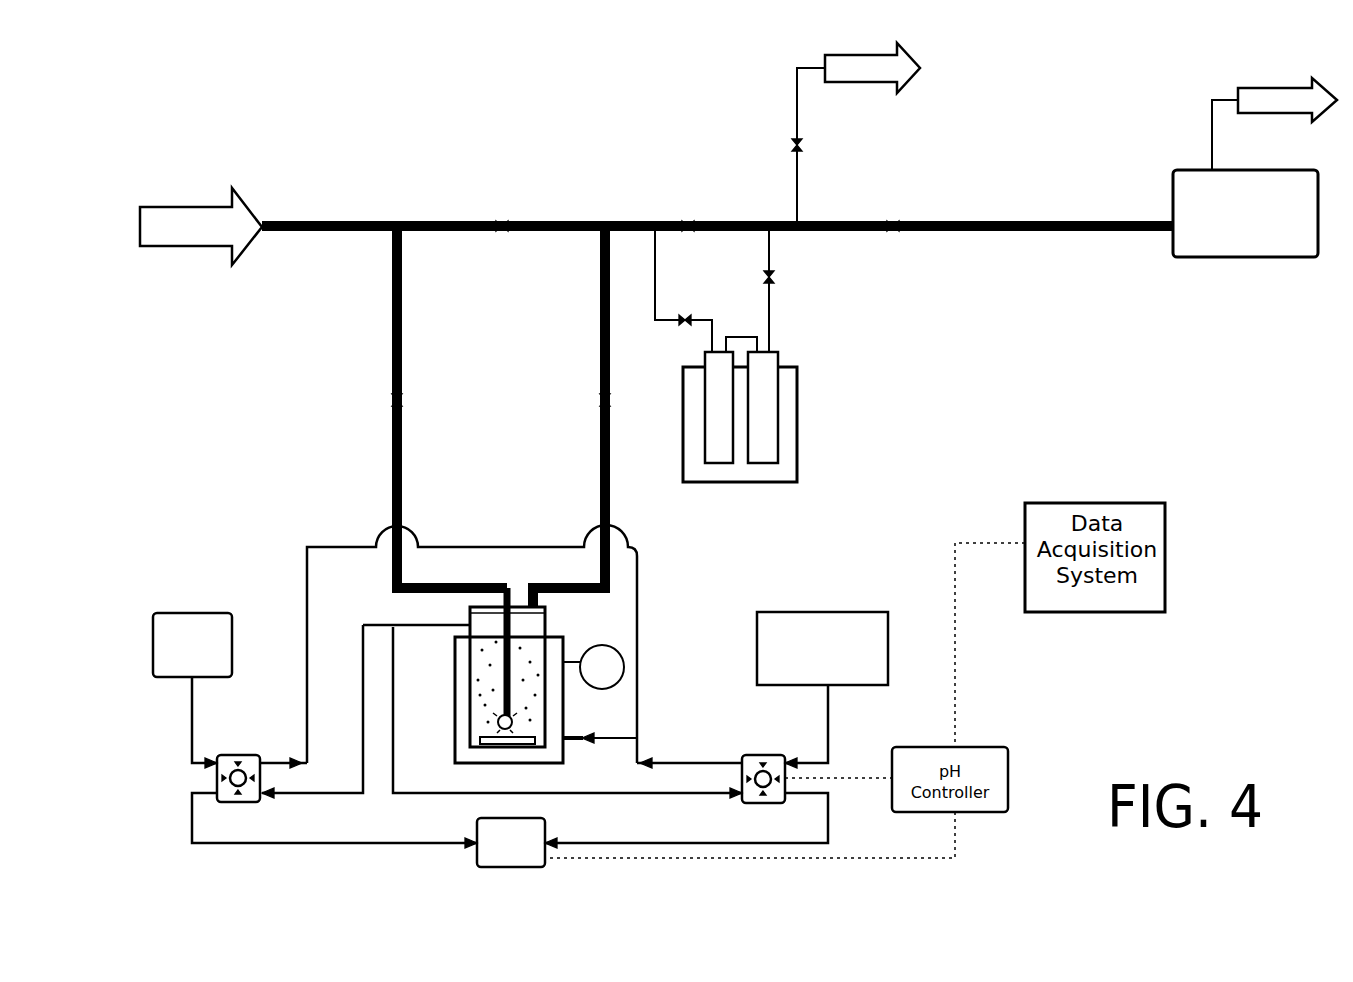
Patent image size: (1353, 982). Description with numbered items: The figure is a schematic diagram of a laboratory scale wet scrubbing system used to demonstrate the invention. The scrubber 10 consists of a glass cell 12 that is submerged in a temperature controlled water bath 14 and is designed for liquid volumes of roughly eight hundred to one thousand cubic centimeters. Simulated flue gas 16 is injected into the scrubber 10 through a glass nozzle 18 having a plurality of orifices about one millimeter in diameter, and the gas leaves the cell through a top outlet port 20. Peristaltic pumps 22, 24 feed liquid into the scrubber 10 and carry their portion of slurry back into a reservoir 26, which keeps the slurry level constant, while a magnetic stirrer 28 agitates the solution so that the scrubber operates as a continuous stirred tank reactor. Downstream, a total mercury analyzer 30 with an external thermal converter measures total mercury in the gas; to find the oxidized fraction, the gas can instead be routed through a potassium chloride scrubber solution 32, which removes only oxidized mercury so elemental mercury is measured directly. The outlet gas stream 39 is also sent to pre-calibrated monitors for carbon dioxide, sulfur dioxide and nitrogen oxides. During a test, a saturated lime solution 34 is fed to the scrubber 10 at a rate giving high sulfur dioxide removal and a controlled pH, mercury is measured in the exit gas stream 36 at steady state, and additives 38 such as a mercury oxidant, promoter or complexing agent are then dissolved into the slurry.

The scrubber 10 is at (462, 578).
The glass cell 12 is at (519, 628).
The temperature controlled water bath 14 is at (455, 670).
The simulated flue gas 16 is at (272, 222).
The glass nozzle 18 is at (542, 762).
The top outlet port 20 is at (552, 574).
The peristaltic pump 22 is at (745, 765).
The peristaltic pump 24 is at (250, 757).
The reservoir 26 is at (477, 848).
The magnetic stirrer 28 is at (455, 760).
The total mercury analyzer 30 is at (1200, 247).
The potassium chloride scrubber solution 32 is at (762, 415).
The saturated lime solution 34 is at (858, 612).
The exit gas stream 36 is at (1067, 233).
The additives 38 is at (207, 622).
The outlet gas stream 39 is at (911, 116).